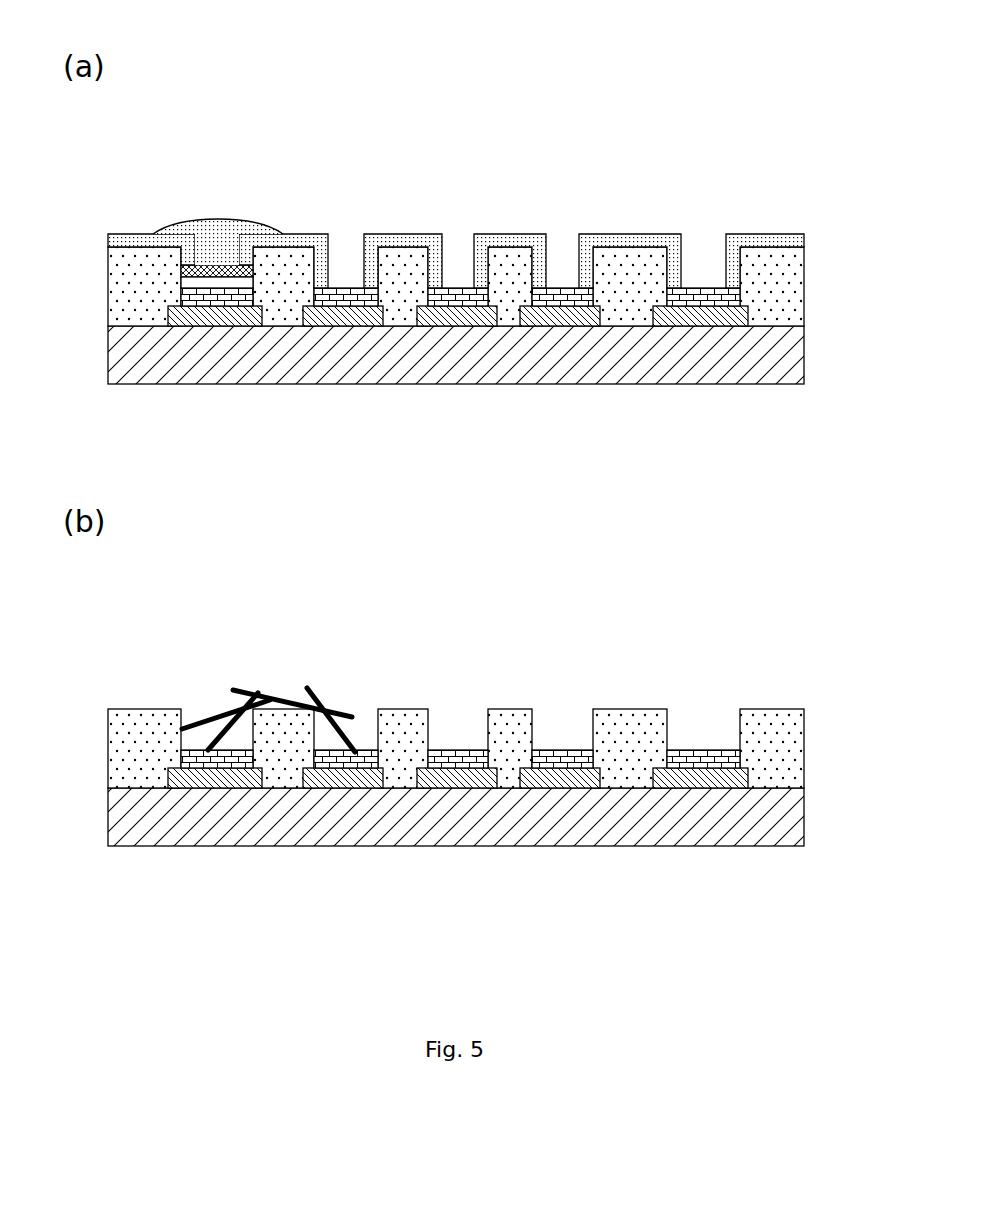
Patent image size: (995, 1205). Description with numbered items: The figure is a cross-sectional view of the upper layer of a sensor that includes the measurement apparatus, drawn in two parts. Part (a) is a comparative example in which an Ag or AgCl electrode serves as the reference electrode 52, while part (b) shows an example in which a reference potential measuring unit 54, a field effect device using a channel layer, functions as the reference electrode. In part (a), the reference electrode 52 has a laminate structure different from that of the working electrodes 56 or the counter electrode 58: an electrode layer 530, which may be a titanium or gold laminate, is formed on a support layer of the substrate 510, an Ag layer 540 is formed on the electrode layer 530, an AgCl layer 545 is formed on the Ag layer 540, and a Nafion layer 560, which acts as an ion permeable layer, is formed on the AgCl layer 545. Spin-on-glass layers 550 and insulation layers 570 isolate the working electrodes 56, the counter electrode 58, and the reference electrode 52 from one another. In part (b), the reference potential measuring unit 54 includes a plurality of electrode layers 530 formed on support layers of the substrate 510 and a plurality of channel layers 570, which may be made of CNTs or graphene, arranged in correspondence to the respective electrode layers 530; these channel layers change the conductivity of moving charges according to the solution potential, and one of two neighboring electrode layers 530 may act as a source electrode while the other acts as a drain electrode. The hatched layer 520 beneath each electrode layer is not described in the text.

The reference electrode 52 is at (417, 187).
The reference potential measuring unit 54 is at (267, 622).
The working electrodes 56 is at (347, 233).
The counter electrode 58 is at (701, 221).
The substrate 510 is at (788, 353).
The lower electrode layer 520 is at (212, 327).
The electrode layer 530 is at (255, 300).
The Ag layer 540 is at (190, 283).
The AgCl layer 545 is at (190, 266).
The spin-on-glass layers 550 is at (136, 239).
The Nafion layer 560 is at (217, 231).
The insulation layers 570 is at (792, 285).